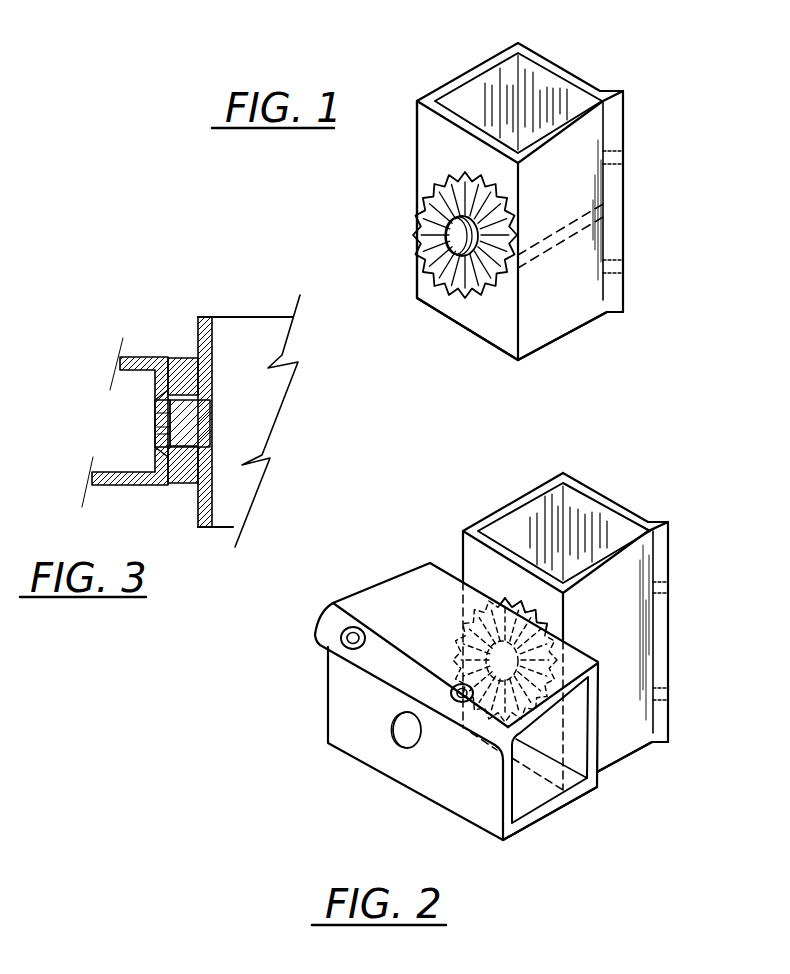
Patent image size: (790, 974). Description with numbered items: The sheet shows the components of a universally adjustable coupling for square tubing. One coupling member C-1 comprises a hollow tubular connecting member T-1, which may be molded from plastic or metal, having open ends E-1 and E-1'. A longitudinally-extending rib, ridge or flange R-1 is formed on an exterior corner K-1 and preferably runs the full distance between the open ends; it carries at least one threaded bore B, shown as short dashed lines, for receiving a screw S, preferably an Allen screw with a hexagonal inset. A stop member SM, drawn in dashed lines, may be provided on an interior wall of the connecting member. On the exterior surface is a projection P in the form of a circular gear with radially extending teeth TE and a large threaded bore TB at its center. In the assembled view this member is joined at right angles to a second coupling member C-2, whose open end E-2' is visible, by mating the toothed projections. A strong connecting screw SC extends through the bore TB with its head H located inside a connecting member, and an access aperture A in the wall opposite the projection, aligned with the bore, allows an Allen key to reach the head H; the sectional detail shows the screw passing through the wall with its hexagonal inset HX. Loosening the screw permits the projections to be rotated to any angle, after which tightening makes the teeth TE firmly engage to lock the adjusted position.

In FIG. 1, the coupling member C-1 is at (480, 66).
In FIG. 2, the coupling member C-1 is at (510, 500).
In FIG. 1, the open end E-1 is at (518, 92).
In FIG. 2, the open end E-1 is at (564, 523).
In FIG. 1, the exterior corner K-1 is at (623, 90).
In FIG. 2, the exterior corner K-1 is at (668, 520).
In FIG. 1, the rib, ridge or flange R-1 is at (612, 125).
In FIG. 2, the rib, ridge or flange R-1 is at (660, 552).
In FIG. 1, the threaded bore B is at (623, 160).
In FIG. 2, the threaded bore B is at (668, 590).
In FIG. 1, the connecting member T-1 is at (417, 156).
In FIG. 3, the connecting member T-1 is at (238, 320).
In FIG. 1, the projection P is at (455, 172).
In FIG. 2, the projection P is at (497, 598).
In FIG. 1, the threaded bore TB is at (413, 237).
In FIG. 1, the teeth TE is at (495, 297).
In FIG. 1, the stop member SM is at (575, 235).
In FIG. 1, the open end E-1' is at (570, 344).
In FIG. 2, the open end E-1' is at (639, 763).
In FIG. 2, the coupling member C-2 is at (386, 590).
In FIG. 2, the screw S is at (422, 665).
In FIG. 2, the access aperture A is at (392, 742).
In FIG. 2, the open end E-2' is at (555, 813).
In FIG. 3, the head H is at (155, 404).
In FIG. 3, the hex socket HX is at (158, 425).
In FIG. 3, the connecting screw SC is at (210, 420).